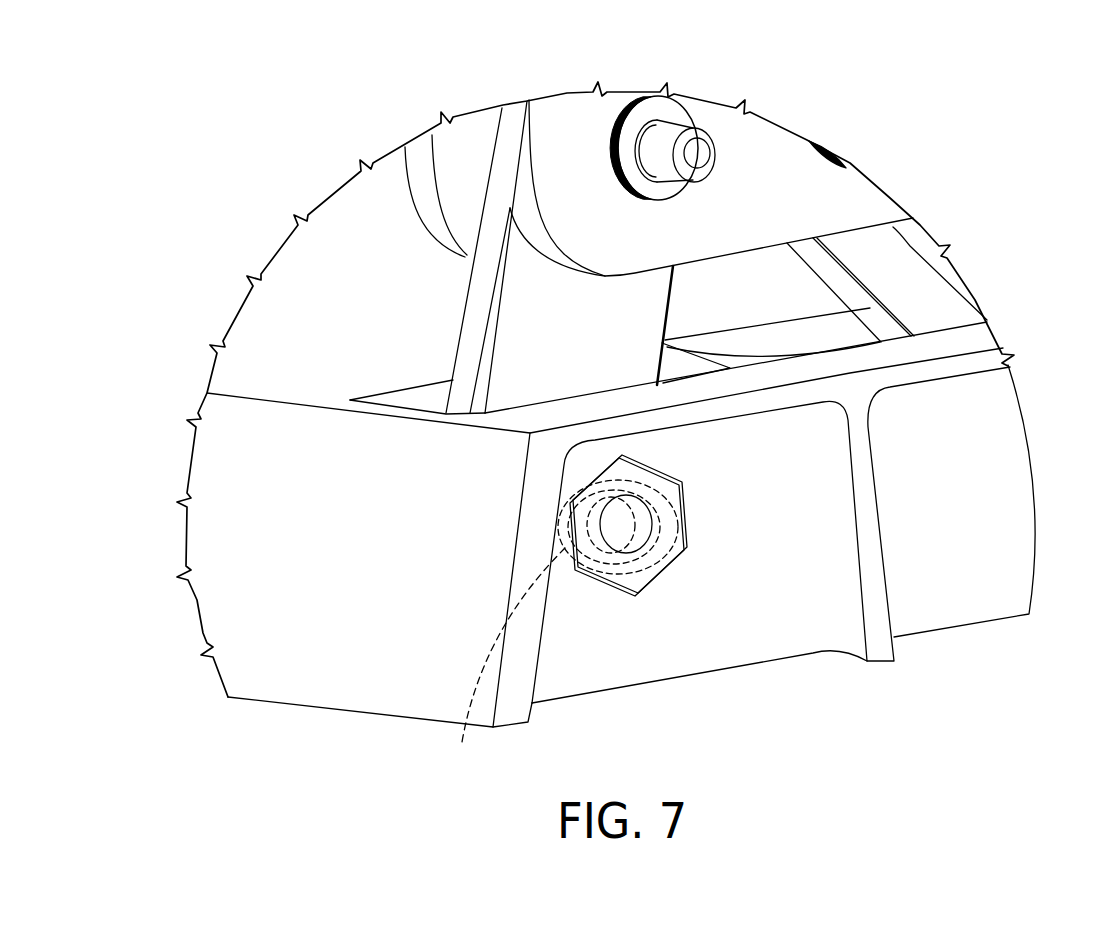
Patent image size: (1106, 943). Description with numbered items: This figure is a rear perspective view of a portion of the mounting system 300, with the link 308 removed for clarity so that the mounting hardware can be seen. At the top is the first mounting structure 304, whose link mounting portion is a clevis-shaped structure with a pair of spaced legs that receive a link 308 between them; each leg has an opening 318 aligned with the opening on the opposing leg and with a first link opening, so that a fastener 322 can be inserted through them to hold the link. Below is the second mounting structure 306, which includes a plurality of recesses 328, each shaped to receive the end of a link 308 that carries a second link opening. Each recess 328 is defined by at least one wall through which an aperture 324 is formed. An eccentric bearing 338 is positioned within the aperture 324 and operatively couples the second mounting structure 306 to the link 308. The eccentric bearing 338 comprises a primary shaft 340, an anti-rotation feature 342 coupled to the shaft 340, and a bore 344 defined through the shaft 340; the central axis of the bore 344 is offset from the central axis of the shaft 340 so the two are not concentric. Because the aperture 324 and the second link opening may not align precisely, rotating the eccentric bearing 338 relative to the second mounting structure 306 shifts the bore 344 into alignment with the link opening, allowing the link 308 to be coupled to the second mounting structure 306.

The mounting system 300 is at (228, 192).
The first mounting structure 304 is at (773, 160).
The second mounting structure 306 is at (380, 546).
The link 308 is at (533, 300).
The opening 318 is at (614, 113).
The fastener 322 is at (695, 152).
The aperture 324 is at (501, 661).
The recess 328 is at (397, 402).
The eccentric bearing 338 is at (613, 607).
The shaft 340 is at (661, 508).
The anti-rotation feature 342 is at (683, 489).
The bore 344 is at (647, 547).